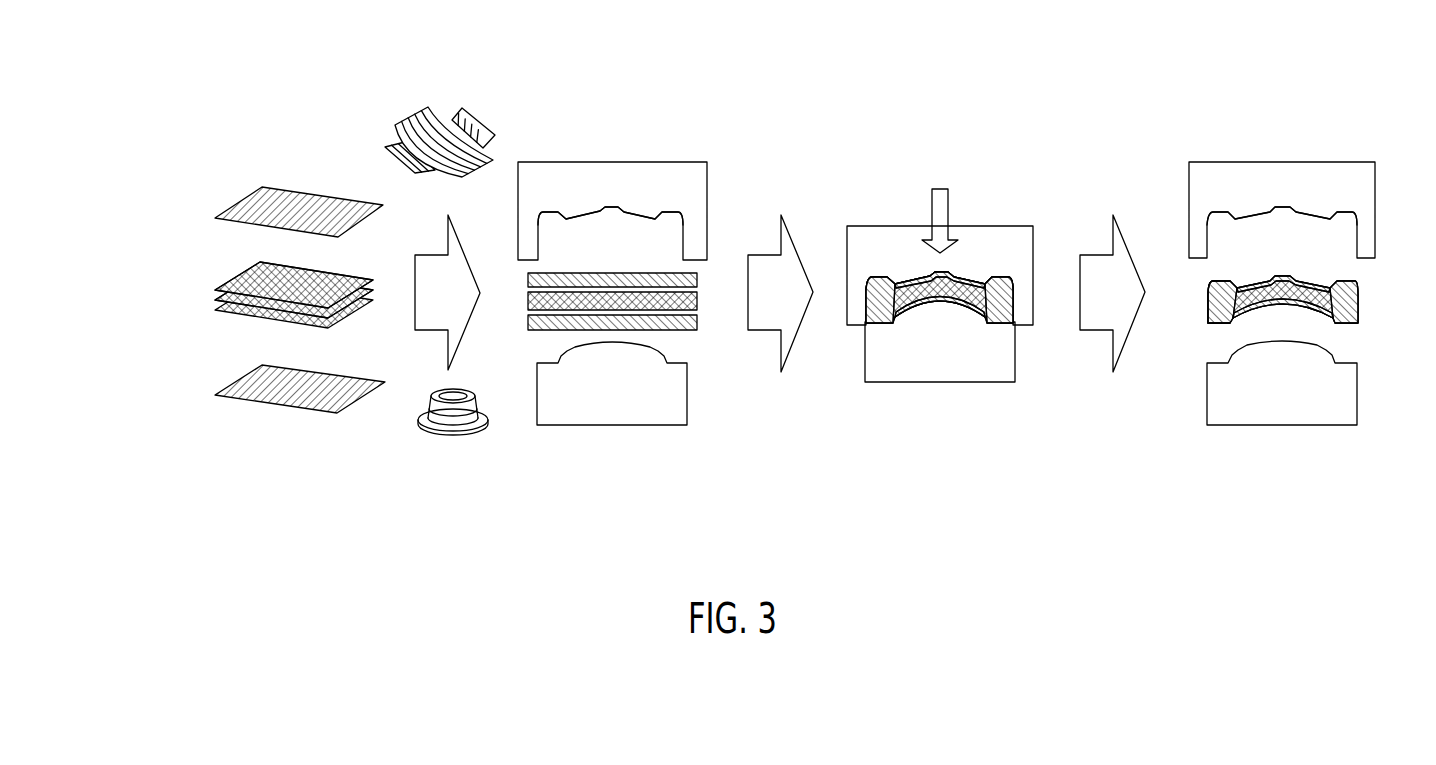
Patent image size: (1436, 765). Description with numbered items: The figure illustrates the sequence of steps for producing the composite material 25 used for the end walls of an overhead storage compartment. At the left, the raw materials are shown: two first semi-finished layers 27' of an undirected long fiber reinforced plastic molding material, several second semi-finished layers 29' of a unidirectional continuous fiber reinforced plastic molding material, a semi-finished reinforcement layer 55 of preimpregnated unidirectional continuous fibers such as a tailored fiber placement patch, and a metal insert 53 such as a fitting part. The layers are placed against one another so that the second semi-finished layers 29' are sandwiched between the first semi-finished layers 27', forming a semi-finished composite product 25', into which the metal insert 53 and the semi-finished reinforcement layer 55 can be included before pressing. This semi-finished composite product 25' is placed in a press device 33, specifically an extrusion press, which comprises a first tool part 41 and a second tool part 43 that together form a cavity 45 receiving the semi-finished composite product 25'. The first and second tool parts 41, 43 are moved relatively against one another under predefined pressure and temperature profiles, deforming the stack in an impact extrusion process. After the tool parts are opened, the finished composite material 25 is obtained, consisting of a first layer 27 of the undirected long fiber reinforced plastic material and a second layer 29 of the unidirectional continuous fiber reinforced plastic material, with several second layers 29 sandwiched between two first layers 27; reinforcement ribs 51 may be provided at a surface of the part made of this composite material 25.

The first semi-finished layer 27' is at (269, 299).
The second semi-finished layer 29' is at (263, 295).
The semi-finished reinforcement layer 55 is at (452, 137).
The metal insert 53 is at (453, 431).
The press device 33 is at (946, 299).
The first tool part 41 is at (625, 196).
The cavity 45 is at (625, 252).
The second tool part 43 is at (625, 401).
The semi-finished composite product 25' is at (642, 344).
The composite material 25 is at (1142, 272).
The second layer 29 is at (1112, 238).
The first layer 27 is at (1142, 307).
The reinforcement rib 51 is at (1226, 280).